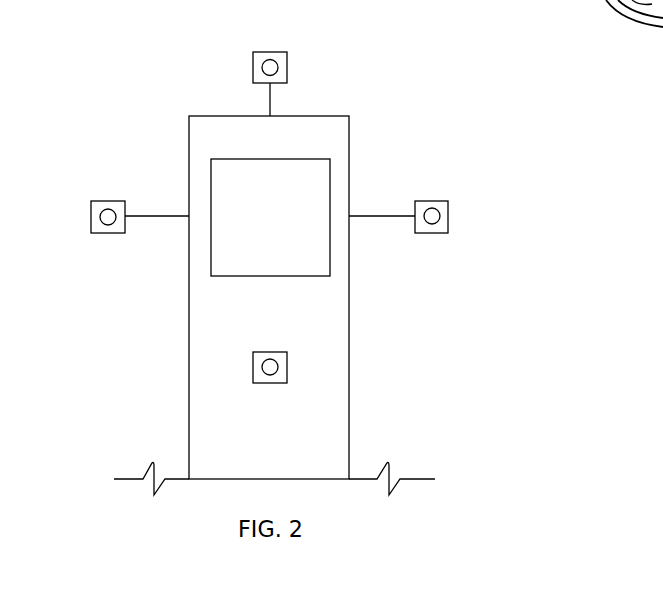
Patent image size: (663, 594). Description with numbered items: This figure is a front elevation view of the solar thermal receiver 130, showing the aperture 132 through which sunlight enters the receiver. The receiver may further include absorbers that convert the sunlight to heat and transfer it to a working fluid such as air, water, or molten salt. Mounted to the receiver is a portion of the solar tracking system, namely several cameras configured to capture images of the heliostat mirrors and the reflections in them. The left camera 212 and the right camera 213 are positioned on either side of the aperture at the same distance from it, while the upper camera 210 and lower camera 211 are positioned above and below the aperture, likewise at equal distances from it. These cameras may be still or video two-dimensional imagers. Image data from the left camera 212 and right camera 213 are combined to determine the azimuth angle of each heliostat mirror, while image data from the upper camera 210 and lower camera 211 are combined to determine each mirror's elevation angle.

The solar thermal receiver 130 is at (355, 316).
The aperture 132 is at (287, 228).
The upper camera 210 is at (290, 62).
The lower camera 211 is at (252, 383).
The left camera 212 is at (106, 236).
The right camera 213 is at (449, 218).